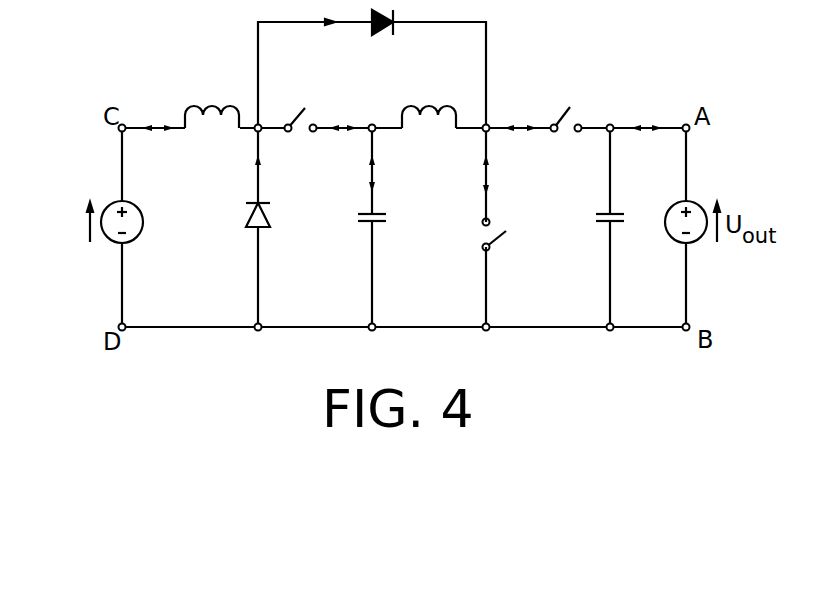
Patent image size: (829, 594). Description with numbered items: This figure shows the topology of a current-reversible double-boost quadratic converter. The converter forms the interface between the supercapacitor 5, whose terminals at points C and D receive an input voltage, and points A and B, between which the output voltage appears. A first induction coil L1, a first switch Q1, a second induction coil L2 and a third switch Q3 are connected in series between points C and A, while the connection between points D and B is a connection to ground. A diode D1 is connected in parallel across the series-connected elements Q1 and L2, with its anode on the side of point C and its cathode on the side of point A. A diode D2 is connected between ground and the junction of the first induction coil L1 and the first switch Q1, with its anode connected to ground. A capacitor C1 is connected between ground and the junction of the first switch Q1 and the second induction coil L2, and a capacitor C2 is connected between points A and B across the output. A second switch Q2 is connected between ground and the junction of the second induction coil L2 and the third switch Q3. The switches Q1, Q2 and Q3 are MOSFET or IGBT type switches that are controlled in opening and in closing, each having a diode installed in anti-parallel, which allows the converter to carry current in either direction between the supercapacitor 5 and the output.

The supercapacitor 5 is at (103, 189).
The first induction coil L1 is at (212, 95).
The second induction coil L2 is at (429, 94).
The diode D1 is at (381, 44).
The diode D2 is at (238, 216).
The first switch Q1 is at (304, 103).
The second switch Q2 is at (473, 231).
The third switch Q3 is at (568, 104).
The capacitor C1 is at (355, 224).
The capacitor C2 is at (592, 214).